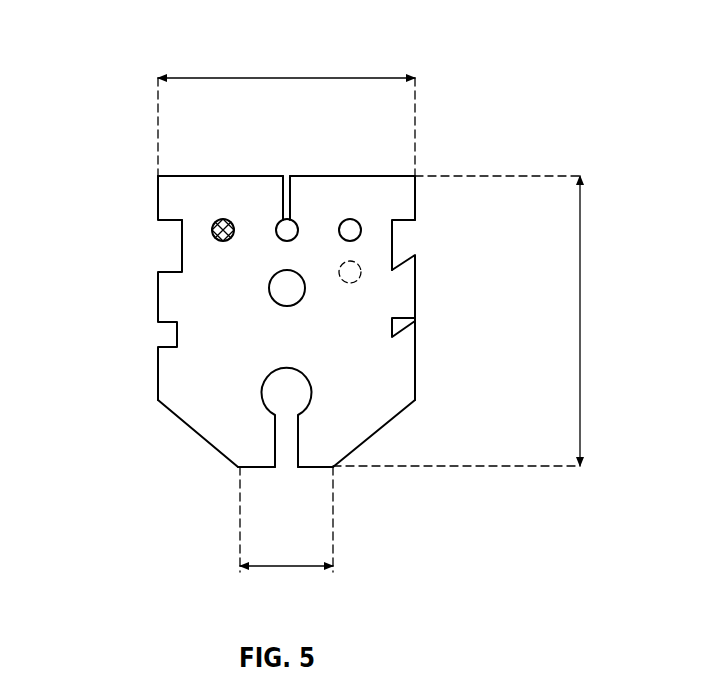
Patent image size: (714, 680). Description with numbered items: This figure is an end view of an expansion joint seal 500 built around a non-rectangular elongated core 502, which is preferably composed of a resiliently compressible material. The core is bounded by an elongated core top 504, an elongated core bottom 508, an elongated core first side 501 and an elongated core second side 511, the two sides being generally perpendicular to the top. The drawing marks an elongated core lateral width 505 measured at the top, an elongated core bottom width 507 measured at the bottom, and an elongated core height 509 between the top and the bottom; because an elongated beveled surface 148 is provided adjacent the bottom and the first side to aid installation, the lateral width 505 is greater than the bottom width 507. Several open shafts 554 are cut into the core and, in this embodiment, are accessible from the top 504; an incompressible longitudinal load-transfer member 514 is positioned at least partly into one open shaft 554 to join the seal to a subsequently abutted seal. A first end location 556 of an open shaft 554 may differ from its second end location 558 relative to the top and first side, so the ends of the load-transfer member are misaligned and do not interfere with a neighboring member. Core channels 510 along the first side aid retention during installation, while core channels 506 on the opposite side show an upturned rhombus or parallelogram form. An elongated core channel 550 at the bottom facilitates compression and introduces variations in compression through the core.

The expansion joint seal 500 is at (521, 42).
The elongated core first side 501 is at (158, 207).
The non-rectangular elongated core 502 is at (177, 378).
The elongated core top 504 is at (388, 176).
The elongated core lateral width 505 is at (287, 77).
The core channels 506 is at (392, 232).
The elongated core bottom width 507 is at (285, 568).
The elongated core bottom 508 is at (258, 470).
The elongated core height 509 is at (580, 322).
The core channels 510 is at (160, 342).
The elongated core second side 511 is at (415, 212).
The longitudinal load-transfer member 514 is at (229, 222).
The elongated core channel 550 is at (287, 395).
The open shaft 554 is at (339, 232).
The first end location 556 is at (350, 219).
The second end location 558 is at (361, 272).
The elongated beveled surface 148 is at (193, 428).